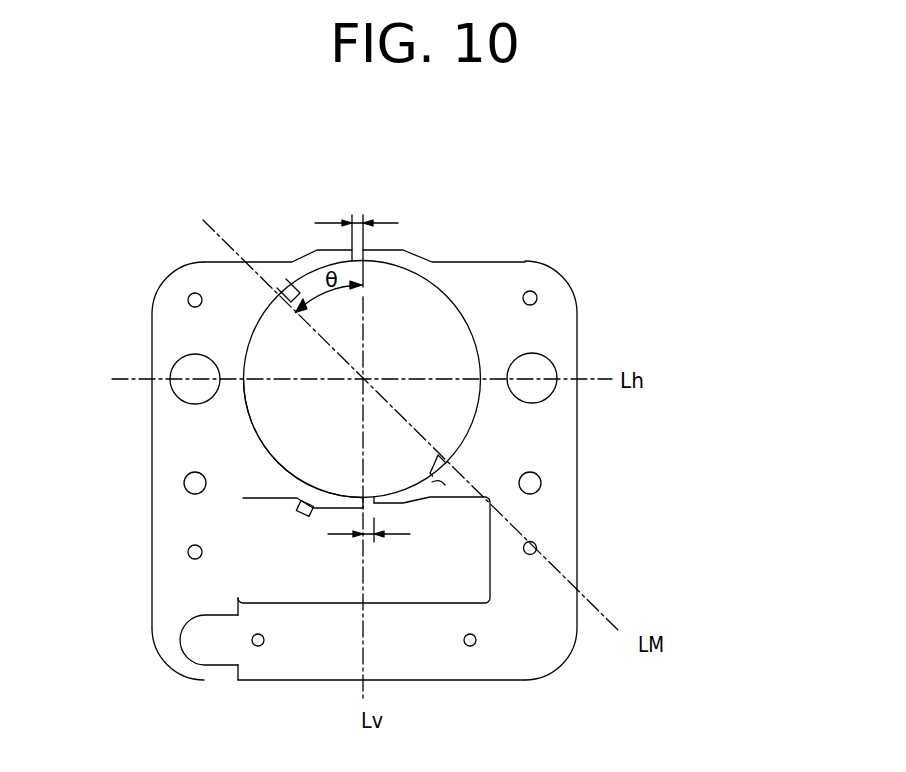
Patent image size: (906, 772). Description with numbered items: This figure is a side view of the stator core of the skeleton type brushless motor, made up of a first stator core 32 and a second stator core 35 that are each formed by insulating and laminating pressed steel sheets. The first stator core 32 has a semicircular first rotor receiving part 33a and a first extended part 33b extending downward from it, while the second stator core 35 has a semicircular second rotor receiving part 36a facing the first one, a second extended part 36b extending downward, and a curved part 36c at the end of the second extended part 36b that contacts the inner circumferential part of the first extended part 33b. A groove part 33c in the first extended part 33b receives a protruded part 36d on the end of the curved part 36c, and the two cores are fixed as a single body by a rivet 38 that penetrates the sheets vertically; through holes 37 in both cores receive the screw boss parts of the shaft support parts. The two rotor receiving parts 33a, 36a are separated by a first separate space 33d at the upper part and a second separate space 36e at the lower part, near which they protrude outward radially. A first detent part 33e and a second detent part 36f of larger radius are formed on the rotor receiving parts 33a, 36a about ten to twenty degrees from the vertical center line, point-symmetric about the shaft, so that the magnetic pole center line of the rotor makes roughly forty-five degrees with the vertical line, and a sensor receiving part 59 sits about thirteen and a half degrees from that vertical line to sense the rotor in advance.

The first stator core 32 is at (162, 222).
The second stator core 35 is at (562, 219).
The first rotor receiving part 33a is at (258, 436).
The first extended part 33b is at (160, 517).
The groove part 33c is at (184, 650).
The first separate space 33d is at (358, 213).
The first detent part 33e is at (311, 268).
The second rotor receiving part 36a is at (462, 318).
The second extended part 36b is at (576, 518).
The curved part 36c is at (398, 655).
The protruded part 36d is at (212, 648).
The second separate space 36e is at (371, 522).
The second detent part 36f is at (409, 489).
The through hole 37 is at (176, 383).
The rivet 38 is at (189, 301).
The sensor receiving part 59 is at (297, 508).